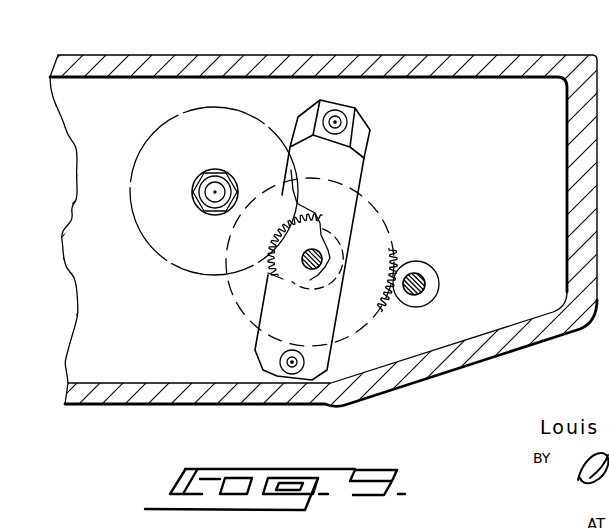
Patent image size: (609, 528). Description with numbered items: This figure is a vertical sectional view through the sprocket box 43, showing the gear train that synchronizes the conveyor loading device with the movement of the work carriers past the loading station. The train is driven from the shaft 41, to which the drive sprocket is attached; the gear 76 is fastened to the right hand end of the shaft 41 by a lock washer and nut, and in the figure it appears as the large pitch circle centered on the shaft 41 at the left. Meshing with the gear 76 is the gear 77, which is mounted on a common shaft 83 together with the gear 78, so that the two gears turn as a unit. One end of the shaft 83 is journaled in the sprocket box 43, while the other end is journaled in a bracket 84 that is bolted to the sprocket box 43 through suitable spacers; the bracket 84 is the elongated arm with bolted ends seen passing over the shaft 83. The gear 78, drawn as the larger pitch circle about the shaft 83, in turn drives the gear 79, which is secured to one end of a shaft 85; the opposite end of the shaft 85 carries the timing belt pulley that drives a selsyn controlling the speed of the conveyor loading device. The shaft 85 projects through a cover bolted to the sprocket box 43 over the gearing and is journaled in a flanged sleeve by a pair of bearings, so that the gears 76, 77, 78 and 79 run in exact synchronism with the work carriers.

The sprocket box 43 is at (410, 57).
The gear 76 is at (172, 117).
The shaft 41 is at (194, 203).
The bracket 84 is at (368, 155).
The gear 78 is at (386, 222).
The gear 77 is at (283, 279).
The shaft 83 is at (314, 268).
The gear 79 is at (436, 292).
The shaft 85 is at (417, 306).